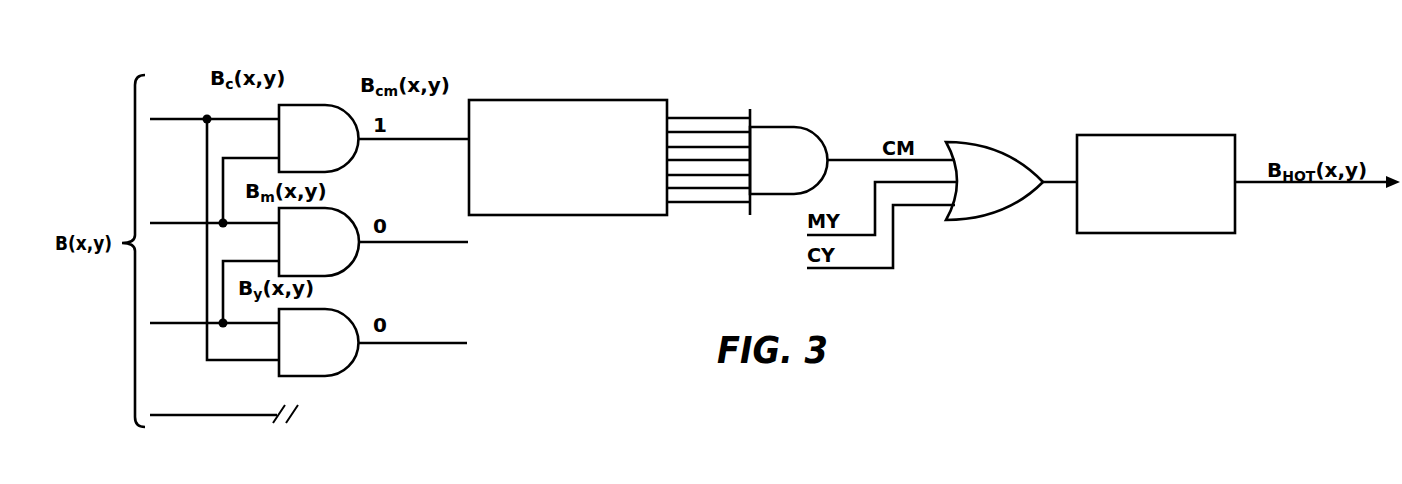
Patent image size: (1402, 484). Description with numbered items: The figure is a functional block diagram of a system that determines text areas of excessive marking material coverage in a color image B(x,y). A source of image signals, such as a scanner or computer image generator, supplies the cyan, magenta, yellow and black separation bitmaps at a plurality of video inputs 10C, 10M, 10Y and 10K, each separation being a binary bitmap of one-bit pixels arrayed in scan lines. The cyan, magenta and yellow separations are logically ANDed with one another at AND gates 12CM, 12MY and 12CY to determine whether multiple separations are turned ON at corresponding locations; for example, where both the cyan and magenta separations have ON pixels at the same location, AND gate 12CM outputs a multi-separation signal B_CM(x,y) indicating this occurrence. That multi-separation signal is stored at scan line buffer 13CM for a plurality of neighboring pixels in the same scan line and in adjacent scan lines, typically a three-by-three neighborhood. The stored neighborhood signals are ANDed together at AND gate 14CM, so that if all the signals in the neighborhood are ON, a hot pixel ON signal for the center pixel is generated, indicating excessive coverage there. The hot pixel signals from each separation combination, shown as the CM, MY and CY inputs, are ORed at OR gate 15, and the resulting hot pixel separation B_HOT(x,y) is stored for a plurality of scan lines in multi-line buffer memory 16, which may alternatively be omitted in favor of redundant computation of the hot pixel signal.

The video input 10C is at (214, 224).
The video input 10M is at (214, 193).
The video input 10Y is at (214, 294).
The video input 10K is at (224, 405).
The AND gate 12CM is at (345, 166).
The AND gate 12MY is at (345, 268).
The AND gate 12CY is at (345, 368).
The scan line buffer 13CM is at (553, 100).
The AND gate 14CM is at (777, 127).
The OR gate 15 is at (977, 148).
The multi-line buffer memory 16 is at (1117, 135).